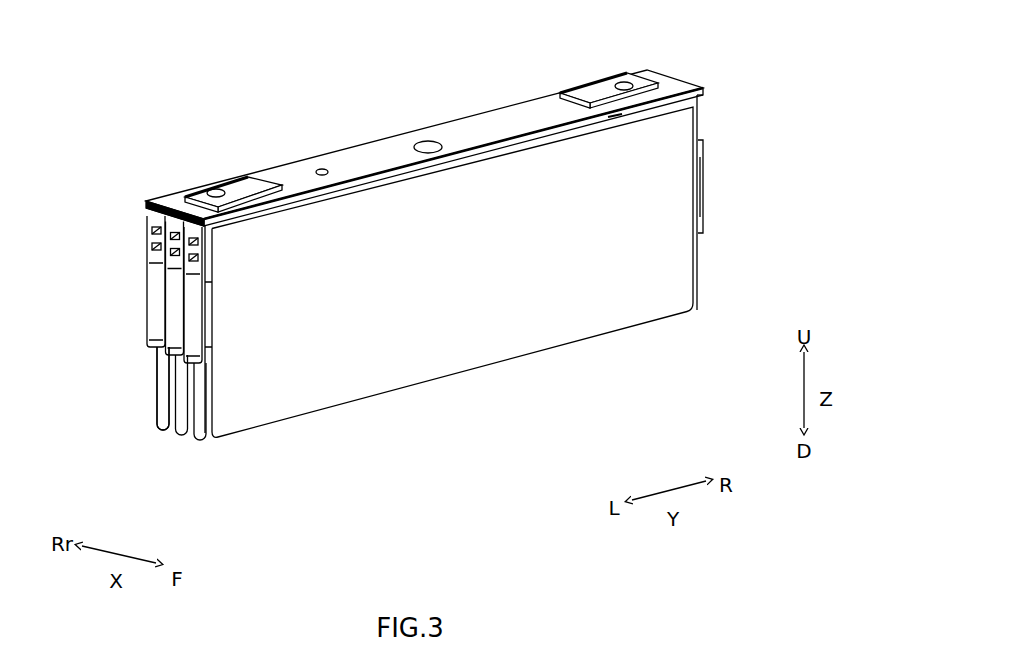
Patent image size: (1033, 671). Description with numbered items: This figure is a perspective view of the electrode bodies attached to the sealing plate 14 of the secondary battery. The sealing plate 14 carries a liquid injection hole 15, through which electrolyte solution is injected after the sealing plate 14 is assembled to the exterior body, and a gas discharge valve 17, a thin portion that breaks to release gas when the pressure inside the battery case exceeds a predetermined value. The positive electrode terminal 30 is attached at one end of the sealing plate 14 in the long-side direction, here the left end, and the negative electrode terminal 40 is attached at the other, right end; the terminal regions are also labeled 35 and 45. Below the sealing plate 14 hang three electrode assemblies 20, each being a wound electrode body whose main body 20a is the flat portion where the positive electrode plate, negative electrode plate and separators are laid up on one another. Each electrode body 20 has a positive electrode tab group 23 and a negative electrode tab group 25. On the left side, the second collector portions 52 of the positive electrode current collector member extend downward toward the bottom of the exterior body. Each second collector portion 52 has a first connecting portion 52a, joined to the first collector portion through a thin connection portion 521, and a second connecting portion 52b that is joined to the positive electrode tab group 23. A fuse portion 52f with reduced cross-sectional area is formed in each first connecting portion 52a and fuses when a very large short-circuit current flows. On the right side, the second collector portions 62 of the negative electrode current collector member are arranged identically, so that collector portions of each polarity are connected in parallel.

The sealing plate 14 is at (500, 120).
The liquid injection hole 15 is at (322, 169).
The gas discharge valve 17 is at (428, 141).
The electrode body 20 is at (200, 428).
The main body 20a is at (116, 411).
The positive electrode tab group 23 is at (208, 338).
The negative electrode tab group 25 is at (705, 212).
The positive electrode terminal 30 is at (214, 188).
The first terminal plate 35 is at (248, 182).
The negative electrode terminal 40 is at (623, 80).
The second terminal plate 45 is at (598, 92).
The second collector portion 52 is at (190, 316).
The first connecting portion 52a is at (183, 223).
The second connecting portion 52b is at (186, 360).
The fuse portion 52f is at (188, 275).
The connection portion 521 is at (189, 242).
The second collector portion 62 is at (708, 165).